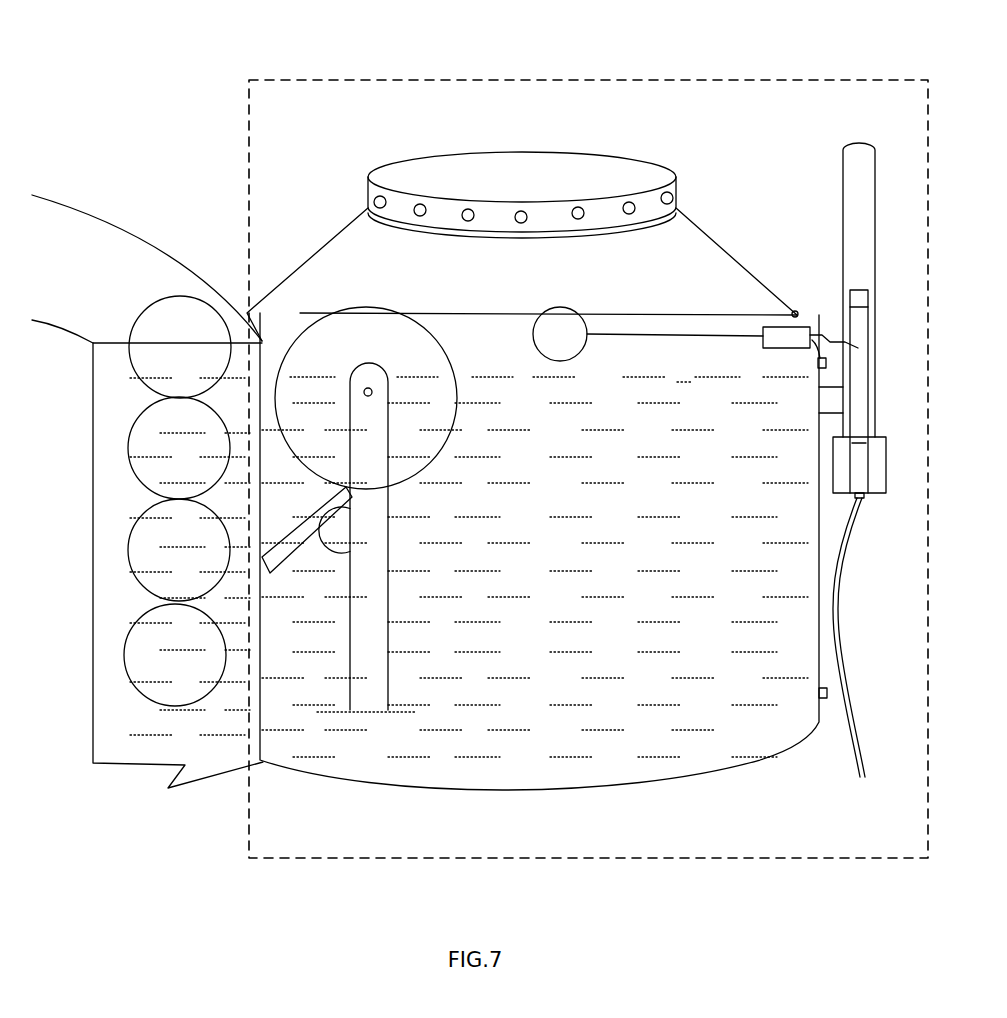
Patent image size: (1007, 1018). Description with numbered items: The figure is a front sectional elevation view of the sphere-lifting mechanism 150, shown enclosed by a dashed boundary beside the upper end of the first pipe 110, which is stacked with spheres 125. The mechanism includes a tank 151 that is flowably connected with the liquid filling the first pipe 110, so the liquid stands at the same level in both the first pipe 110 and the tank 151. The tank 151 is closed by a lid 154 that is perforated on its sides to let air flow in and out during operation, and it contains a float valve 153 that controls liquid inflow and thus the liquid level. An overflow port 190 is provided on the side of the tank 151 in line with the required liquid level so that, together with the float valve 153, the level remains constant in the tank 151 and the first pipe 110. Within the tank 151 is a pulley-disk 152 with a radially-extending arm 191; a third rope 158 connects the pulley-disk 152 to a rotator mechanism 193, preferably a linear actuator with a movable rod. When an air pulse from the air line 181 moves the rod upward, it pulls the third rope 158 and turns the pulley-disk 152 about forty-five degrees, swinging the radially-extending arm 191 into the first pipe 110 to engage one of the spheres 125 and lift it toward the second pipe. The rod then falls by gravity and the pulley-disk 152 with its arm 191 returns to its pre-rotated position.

The first pipe 110 is at (90, 762).
The spheres 125 is at (145, 510).
The sphere-lifting mechanism 150 is at (249, 86).
The tank 151 is at (733, 257).
The pulley-disk 152 is at (322, 318).
The float valve 153 is at (561, 361).
The lid 154 is at (535, 177).
The third rope 158 is at (470, 312).
The air line 181 is at (836, 605).
The overflow port 190 is at (826, 345).
The radially-extending arm 191 is at (281, 556).
The rotator mechanism 193 is at (848, 340).